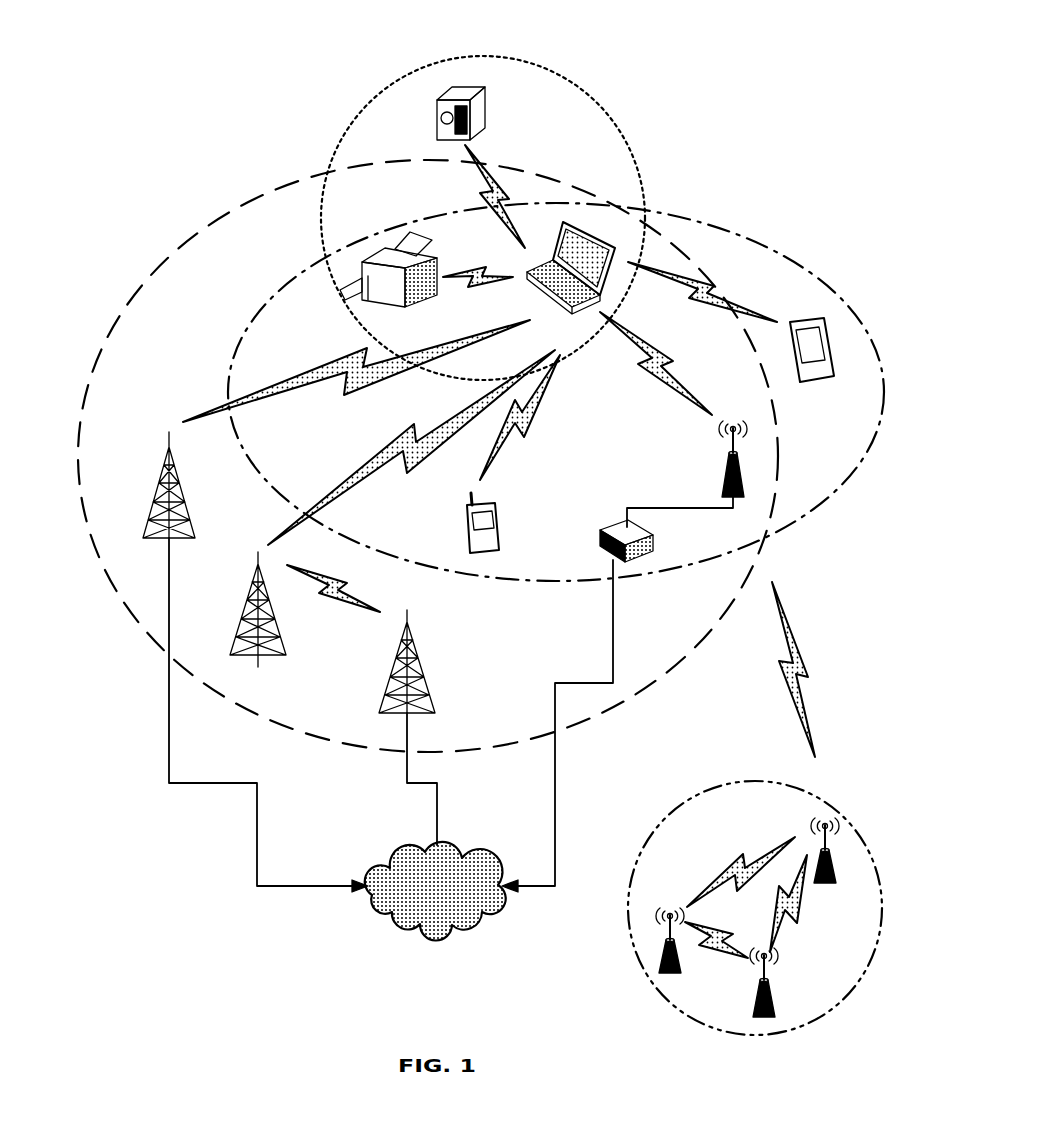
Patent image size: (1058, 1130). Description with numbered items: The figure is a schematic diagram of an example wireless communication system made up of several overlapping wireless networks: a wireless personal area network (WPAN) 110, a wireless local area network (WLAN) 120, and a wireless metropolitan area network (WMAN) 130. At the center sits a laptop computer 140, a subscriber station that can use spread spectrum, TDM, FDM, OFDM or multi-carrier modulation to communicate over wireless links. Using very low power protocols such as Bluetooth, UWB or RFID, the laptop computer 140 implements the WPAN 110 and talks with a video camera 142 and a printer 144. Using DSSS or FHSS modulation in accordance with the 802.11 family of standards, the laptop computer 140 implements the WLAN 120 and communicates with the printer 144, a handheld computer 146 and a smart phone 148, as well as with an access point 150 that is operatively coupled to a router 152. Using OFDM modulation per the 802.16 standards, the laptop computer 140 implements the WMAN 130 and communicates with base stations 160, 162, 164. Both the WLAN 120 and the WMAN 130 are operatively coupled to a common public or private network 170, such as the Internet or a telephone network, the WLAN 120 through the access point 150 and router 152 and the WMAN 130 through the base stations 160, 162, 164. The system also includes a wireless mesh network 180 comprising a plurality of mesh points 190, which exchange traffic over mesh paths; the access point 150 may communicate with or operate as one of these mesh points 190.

The wireless personal area network (WPAN) 110 is at (480, 57).
The wireless local area network (WLAN) 120 is at (212, 365).
The wireless metropolitan area network (WMAN) 130 is at (280, 188).
The laptop computer 140 is at (577, 223).
The video camera 142 is at (478, 114).
The printer 144 is at (407, 303).
The handheld computer 146 is at (802, 320).
The smart phone 148 is at (488, 508).
The access point (AP) 150 is at (720, 473).
The router 152 is at (608, 527).
The base station 160 is at (162, 477).
The base station 162 is at (248, 602).
The base station 164 is at (398, 653).
The common public or private network 170 is at (393, 855).
The wireless mesh network 180 is at (753, 783).
The mesh points (MPs) 190 is at (758, 835).